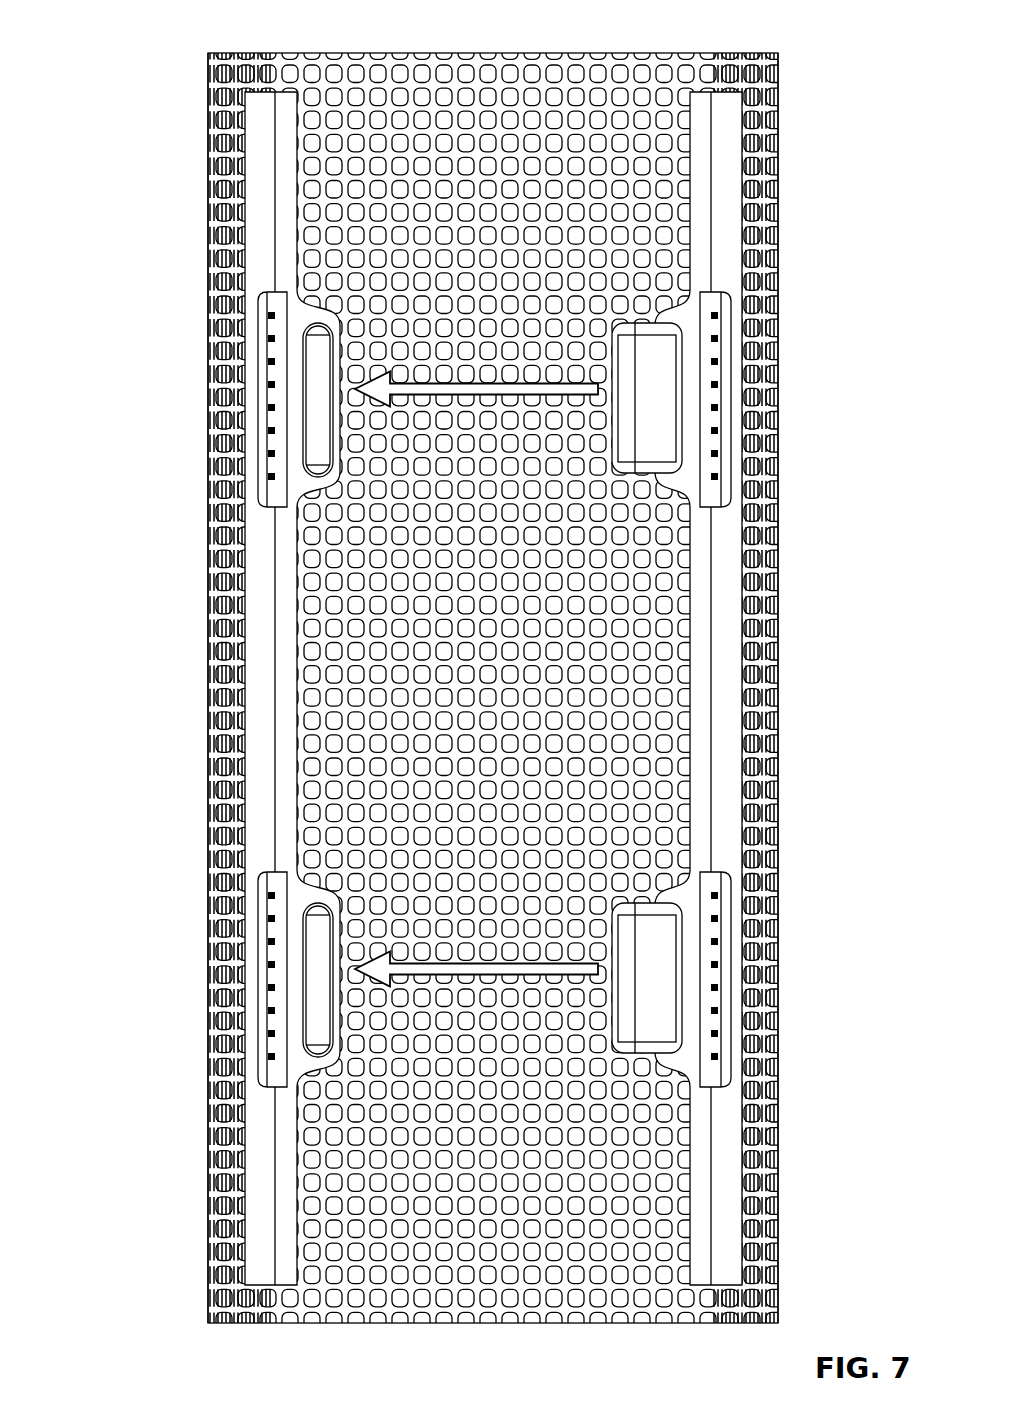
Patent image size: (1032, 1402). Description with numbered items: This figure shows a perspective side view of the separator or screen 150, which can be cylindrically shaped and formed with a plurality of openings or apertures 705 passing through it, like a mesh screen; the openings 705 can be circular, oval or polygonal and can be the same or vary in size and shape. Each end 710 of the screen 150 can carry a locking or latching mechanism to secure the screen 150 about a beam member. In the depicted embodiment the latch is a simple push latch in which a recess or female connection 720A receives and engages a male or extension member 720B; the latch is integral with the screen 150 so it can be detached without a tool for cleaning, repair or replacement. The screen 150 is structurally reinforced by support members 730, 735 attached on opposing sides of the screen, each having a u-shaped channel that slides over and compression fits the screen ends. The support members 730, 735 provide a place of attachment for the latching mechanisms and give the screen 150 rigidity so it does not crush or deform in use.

The separator or screen 150 is at (138, 36).
The openings or apertures 705 is at (348, 655).
The end of the screen 710 is at (727, 70).
The recess or female connection 720A is at (297, 402).
The male or extension member 720B is at (652, 392).
The support member 730 is at (262, 1212).
The support member 735 is at (725, 1168).